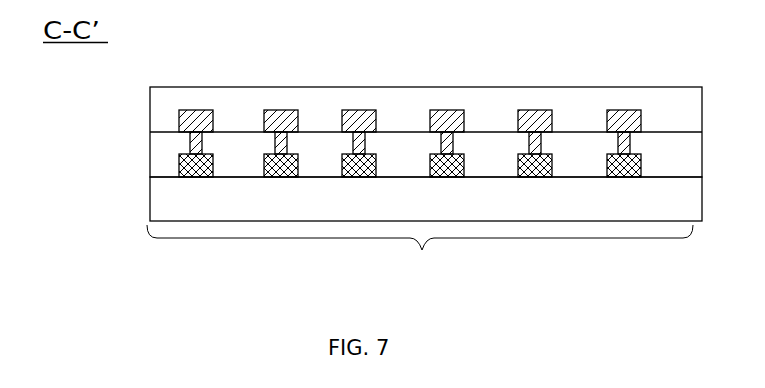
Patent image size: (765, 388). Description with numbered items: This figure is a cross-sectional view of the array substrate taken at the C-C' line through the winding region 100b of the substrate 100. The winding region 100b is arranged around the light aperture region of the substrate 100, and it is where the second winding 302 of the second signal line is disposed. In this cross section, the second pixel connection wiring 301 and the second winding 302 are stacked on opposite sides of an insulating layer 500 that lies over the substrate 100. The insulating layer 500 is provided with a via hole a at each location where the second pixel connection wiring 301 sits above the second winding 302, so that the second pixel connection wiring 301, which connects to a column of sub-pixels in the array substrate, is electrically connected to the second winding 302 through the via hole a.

The substrate 100 is at (193, 208).
The winding region 100b is at (420, 253).
The second pixel connection wiring 301 is at (197, 118).
The second winding 302 is at (200, 170).
The insulating layer 500 is at (168, 144).
The via hole a is at (203, 147).